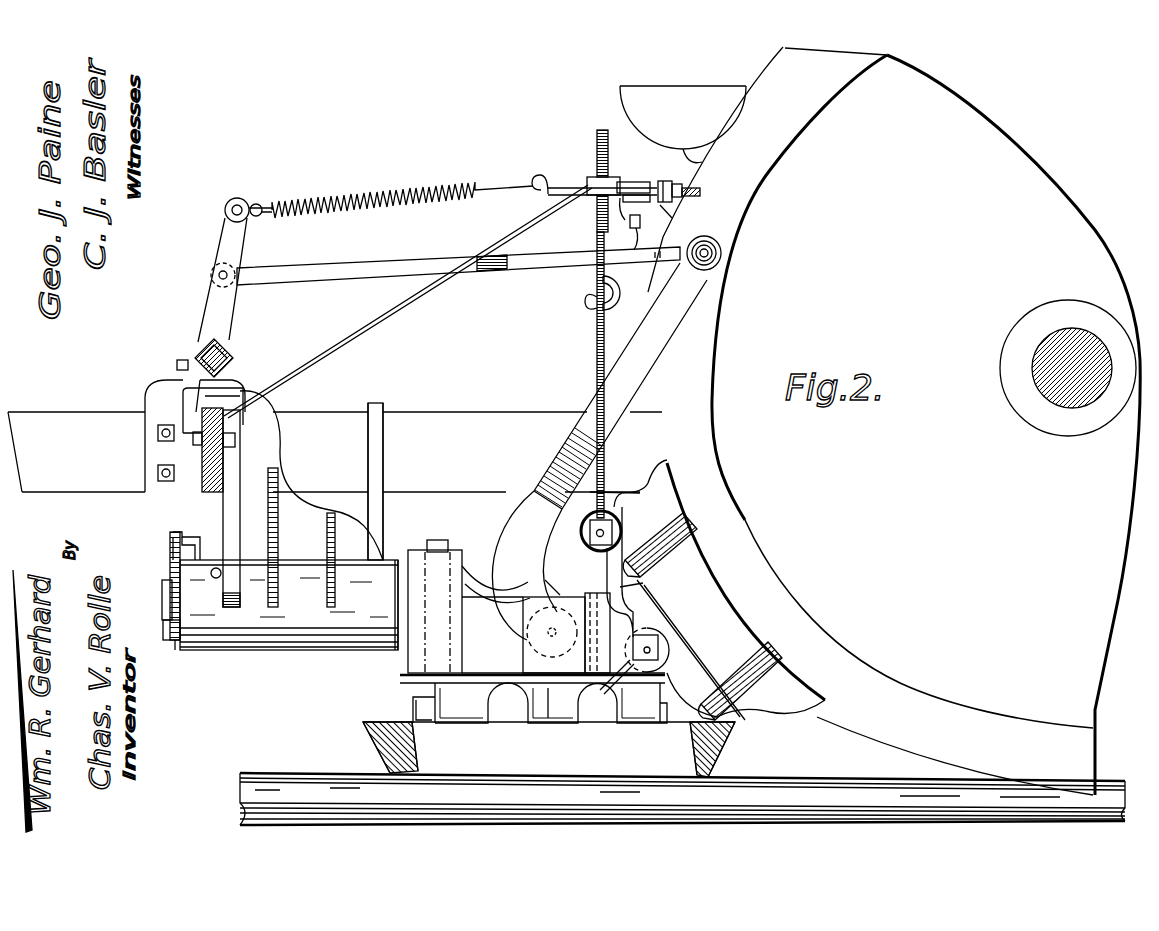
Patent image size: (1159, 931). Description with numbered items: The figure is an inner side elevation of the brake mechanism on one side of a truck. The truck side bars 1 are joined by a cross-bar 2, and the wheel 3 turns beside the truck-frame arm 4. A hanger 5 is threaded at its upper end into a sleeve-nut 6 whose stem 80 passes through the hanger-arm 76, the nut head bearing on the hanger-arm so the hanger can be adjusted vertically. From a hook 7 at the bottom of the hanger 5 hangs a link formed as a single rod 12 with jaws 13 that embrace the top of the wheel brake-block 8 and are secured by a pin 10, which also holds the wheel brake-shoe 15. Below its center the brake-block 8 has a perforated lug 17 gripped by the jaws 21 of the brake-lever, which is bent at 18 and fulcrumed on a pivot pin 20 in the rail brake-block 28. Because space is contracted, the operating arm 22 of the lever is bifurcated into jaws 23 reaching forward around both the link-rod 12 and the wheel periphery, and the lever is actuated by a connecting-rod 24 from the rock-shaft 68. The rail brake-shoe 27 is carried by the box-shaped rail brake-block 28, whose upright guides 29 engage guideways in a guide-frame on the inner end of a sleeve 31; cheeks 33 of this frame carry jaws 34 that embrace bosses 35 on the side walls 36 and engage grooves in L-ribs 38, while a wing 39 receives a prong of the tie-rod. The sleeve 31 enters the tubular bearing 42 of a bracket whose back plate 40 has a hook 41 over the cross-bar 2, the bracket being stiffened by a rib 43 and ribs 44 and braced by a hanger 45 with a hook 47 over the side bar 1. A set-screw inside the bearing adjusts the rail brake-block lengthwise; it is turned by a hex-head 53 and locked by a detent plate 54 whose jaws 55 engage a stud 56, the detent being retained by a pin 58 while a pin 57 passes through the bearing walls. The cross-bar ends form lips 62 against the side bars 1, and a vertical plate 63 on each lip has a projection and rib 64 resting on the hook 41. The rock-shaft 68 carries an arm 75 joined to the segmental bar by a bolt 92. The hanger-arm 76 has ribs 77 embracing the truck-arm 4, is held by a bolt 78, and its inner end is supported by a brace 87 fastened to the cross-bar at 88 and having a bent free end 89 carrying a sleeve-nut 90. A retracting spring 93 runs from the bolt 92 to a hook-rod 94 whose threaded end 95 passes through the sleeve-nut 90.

The side bars 1 is at (76, 412).
The cross-bar 2 is at (203, 490).
The wheels 3 is at (907, 683).
The truck-frame arm 4 is at (676, 219).
The hanger 5 is at (646, 587).
The sleeve-nut 6 is at (598, 177).
The hook 7 is at (585, 305).
The wheel brake-block 8 is at (620, 572).
The pin 10 is at (612, 525).
The link-rod 12 is at (596, 352).
The jaws 13 is at (608, 505).
The wheel brake-shoe 15 is at (705, 595).
The perforated lug 17 is at (608, 683).
The bend of brake-lever 18 is at (540, 580).
The pivot pin 20 is at (652, 650).
The jaws 21 is at (656, 660).
The operating arm 22 is at (512, 511).
The jaws 23 is at (640, 345).
The connecting-rod 24 is at (370, 264).
The rail brake-shoe 27 is at (412, 740).
The rail brake-block 28 is at (410, 692).
The upright guides 29 is at (437, 540).
The sleeve 31 is at (398, 652).
The cheeks 33 is at (462, 610).
The jaws 34 is at (548, 685).
The bosses 35 is at (548, 633).
The side walls 36 is at (528, 580).
The L-ribs 38 is at (590, 590).
The wing 39 is at (488, 677).
The back plate 40 is at (240, 486).
The hook 41 is at (218, 398).
The tubular bearing 42 is at (312, 640).
The rib 43 is at (276, 437).
The ribs 44 is at (279, 540).
The hanger 45 is at (383, 468).
The hook 47 is at (383, 410).
The hex-head 53 is at (160, 597).
The detent plate 54 is at (176, 648).
The jaws 55 is at (172, 548).
The stud 56 is at (197, 545).
The pin 57 is at (222, 570).
The pin 58 is at (163, 630).
The lips 62 is at (160, 493).
The vertical plate 63 is at (156, 432).
The projection and rib 64 is at (212, 393).
The rock-shaft 68 is at (232, 345).
The rock-shaft arm 75 is at (232, 298).
The hanger-arm 76 is at (628, 180).
The transverse ribs 77 is at (635, 208).
The bolt 78 is at (648, 255).
The stem of sleeve-nut 80 is at (623, 232).
The brace 87 is at (428, 297).
The brace attachment 88 is at (236, 432).
The free end of brace 89 is at (665, 181).
The sleeve-nut 90 is at (682, 188).
The bolt 92 is at (226, 204).
The spring 93 is at (405, 190).
The hook-rod 94 is at (540, 196).
The threaded end 95 is at (702, 191).